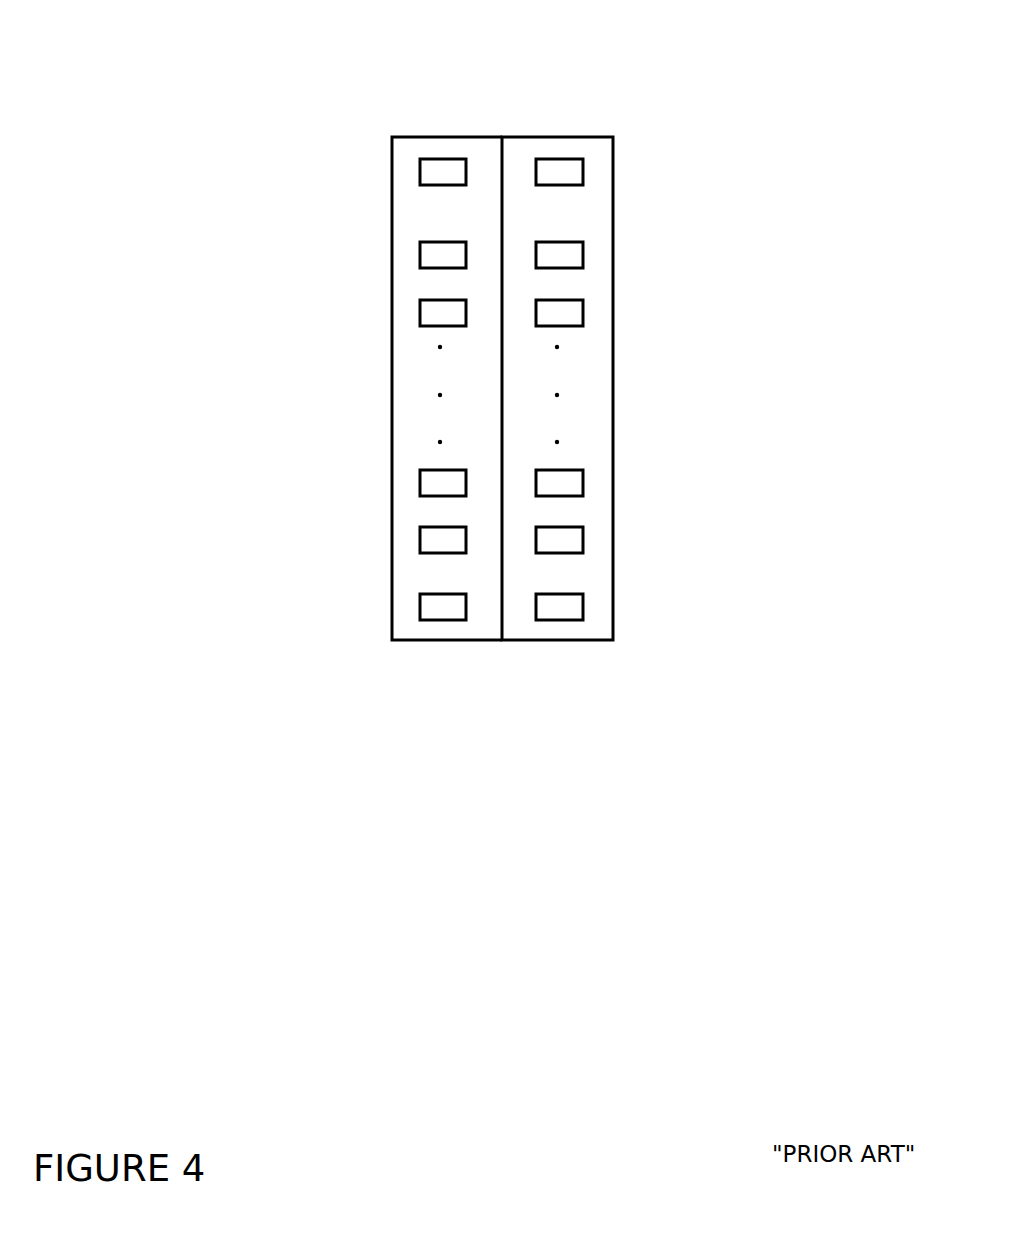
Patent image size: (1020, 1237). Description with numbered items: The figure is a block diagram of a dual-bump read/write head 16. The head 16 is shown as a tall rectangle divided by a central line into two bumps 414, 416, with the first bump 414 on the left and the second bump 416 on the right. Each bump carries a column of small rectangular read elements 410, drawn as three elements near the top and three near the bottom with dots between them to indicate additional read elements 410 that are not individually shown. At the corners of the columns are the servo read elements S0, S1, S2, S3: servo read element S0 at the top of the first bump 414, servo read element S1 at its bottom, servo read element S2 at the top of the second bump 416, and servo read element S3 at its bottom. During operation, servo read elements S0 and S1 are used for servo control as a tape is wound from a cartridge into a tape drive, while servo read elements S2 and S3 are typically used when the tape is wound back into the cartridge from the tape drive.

The read/write head 16 is at (457, 386).
The read elements 410 is at (413, 305).
The bump 414 is at (380, 520).
The bump 416 is at (624, 388).
The servo read element S0 is at (411, 156).
The servo read element S1 is at (417, 618).
The servo read element S2 is at (564, 158).
The servo read element S3 is at (586, 614).